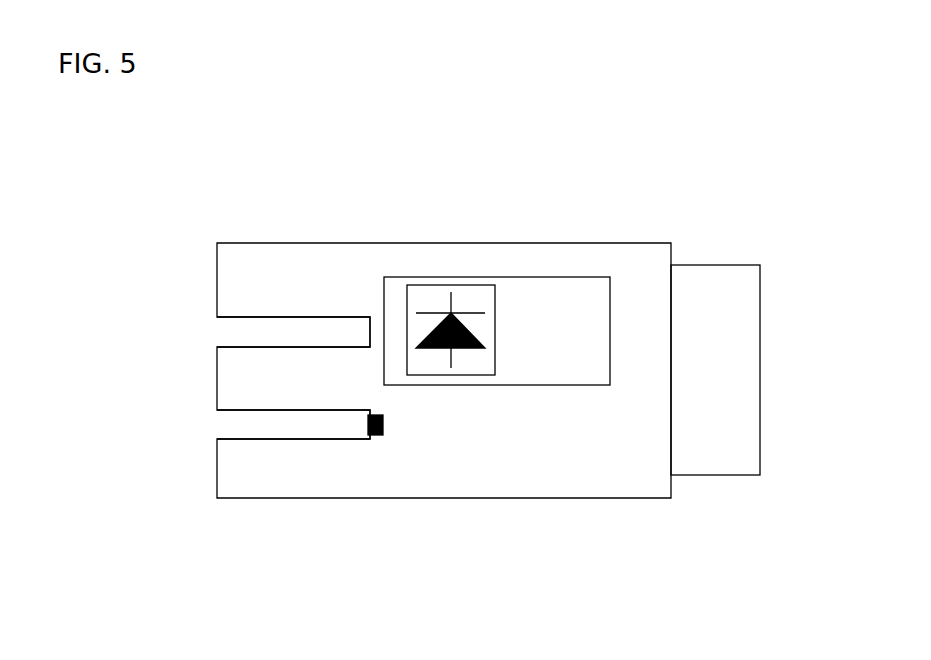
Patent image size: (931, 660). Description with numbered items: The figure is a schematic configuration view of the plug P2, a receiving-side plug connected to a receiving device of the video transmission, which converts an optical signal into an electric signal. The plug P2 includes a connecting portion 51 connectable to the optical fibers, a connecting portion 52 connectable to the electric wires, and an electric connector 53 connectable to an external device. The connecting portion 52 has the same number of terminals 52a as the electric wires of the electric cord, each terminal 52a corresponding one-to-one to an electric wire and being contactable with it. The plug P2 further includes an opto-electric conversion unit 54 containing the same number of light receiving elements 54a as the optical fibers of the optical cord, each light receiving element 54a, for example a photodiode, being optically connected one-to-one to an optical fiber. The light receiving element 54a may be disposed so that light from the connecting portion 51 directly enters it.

The plug P2 is at (233, 200).
The connecting portion 51 is at (368, 332).
The connecting portion 52 is at (370, 412).
The terminal 52a is at (383, 423).
The electric connector 53 is at (710, 476).
The opto-electric conversion unit 54 is at (540, 278).
The light receiving element 54a is at (498, 323).